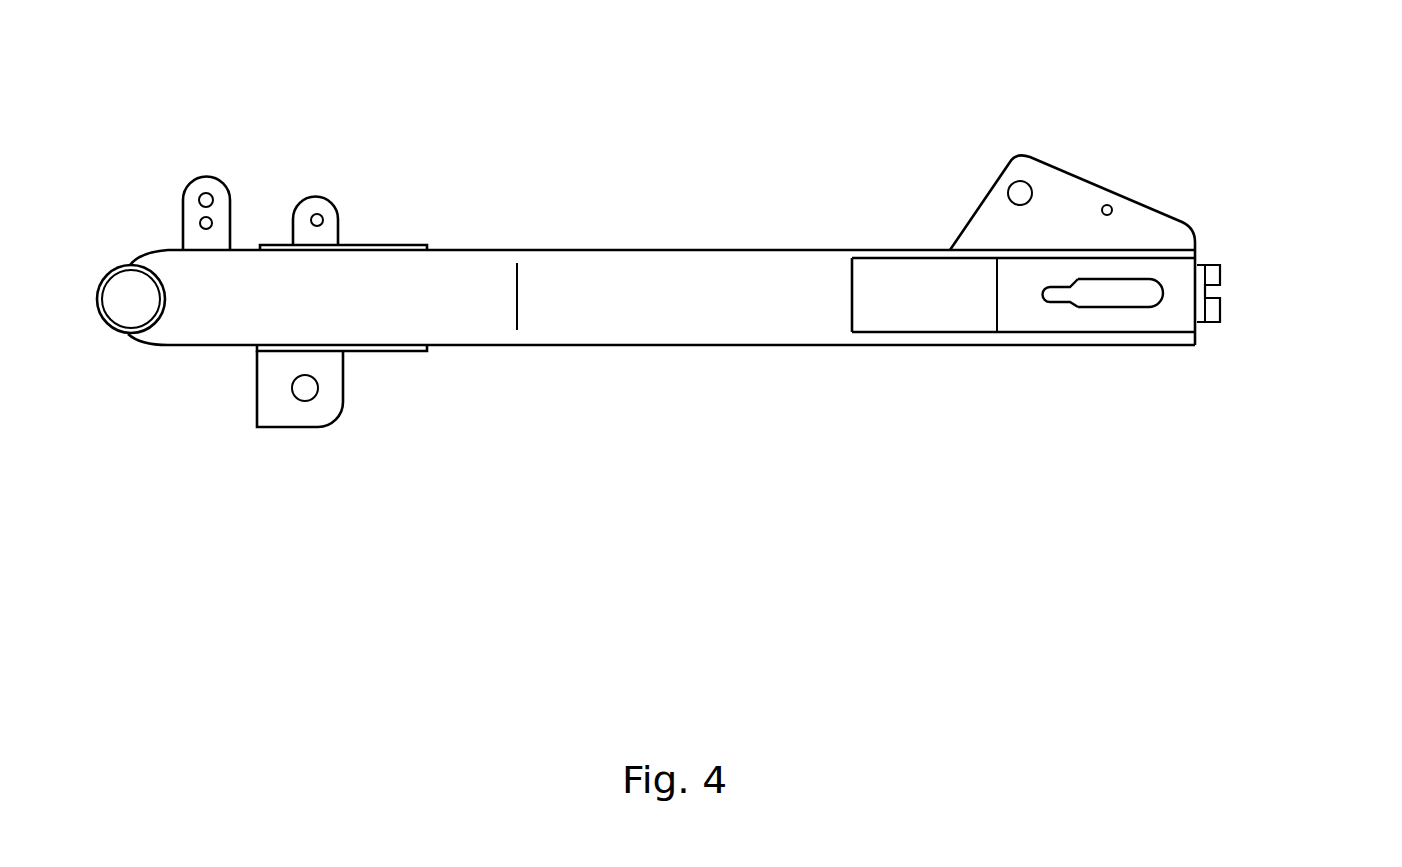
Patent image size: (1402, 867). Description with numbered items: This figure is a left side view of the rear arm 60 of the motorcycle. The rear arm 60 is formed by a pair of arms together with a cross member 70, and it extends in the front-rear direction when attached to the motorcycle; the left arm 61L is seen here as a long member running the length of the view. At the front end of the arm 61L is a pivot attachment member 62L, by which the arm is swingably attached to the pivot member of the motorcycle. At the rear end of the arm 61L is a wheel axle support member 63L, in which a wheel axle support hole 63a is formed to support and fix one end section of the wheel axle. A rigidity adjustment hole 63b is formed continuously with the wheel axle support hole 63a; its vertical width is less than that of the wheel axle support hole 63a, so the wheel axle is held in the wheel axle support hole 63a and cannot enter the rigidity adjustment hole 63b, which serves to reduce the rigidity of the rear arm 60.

The rear arm 60 is at (1200, 125).
The arm 61L is at (655, 270).
The pivot attachment member 62L is at (118, 268).
The wheel axle support member 63L is at (1205, 258).
The wheel axle support hole 63a is at (1107, 295).
The rigidity adjustment hole 63b is at (1057, 303).
The cross member 70 is at (385, 247).